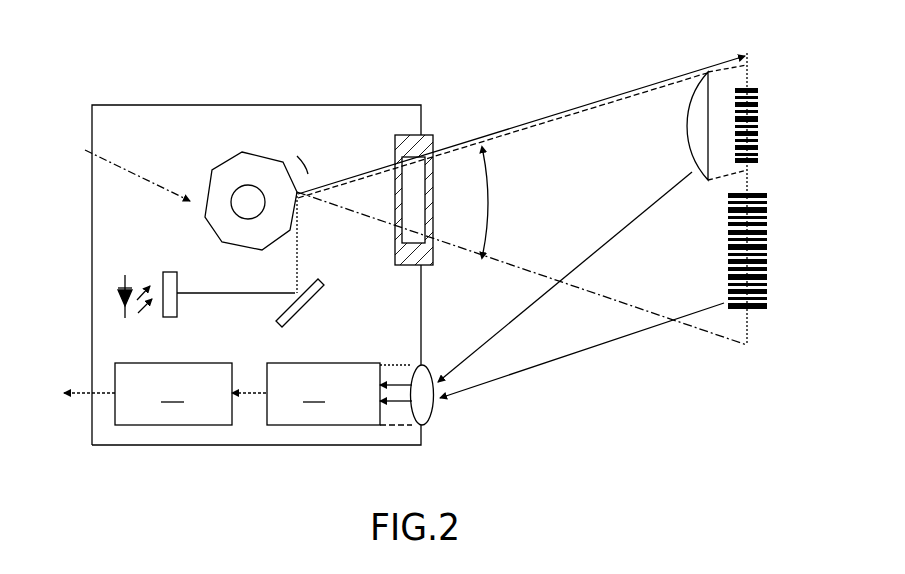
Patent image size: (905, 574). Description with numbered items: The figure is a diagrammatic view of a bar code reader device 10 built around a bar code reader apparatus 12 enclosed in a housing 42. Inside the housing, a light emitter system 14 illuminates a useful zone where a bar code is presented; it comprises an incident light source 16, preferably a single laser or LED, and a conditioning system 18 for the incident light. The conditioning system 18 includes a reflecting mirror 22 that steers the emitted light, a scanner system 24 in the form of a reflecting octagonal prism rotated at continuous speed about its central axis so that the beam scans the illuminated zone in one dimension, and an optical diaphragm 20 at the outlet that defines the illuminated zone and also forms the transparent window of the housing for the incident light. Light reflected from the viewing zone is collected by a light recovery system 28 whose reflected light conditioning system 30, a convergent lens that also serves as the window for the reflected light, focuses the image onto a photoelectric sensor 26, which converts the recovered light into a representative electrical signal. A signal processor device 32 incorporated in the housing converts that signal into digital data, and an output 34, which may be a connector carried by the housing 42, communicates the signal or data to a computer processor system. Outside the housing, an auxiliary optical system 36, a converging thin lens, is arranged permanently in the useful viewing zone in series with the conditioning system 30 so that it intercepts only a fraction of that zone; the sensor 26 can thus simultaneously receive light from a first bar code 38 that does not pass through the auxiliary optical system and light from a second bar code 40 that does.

The bar code reader device 10 is at (143, 70).
The bar code reader apparatus 12 is at (318, 462).
The light emitter system 14 is at (148, 227).
The incident light source 16 is at (118, 297).
The conditioning system 18 is at (127, 169).
The optical diaphragm 20 is at (425, 136).
The reflecting mirror 22 is at (320, 285).
The scanner system 24 is at (283, 162).
The photoelectric sensor 26 is at (306, 394).
The light recovery system 28 is at (415, 430).
The reflected light conditioning system 30 is at (430, 408).
The signal processor device 32 is at (173, 394).
The output 34 is at (94, 397).
The auxiliary optical system 36 is at (690, 125).
The first bar code 38 is at (767, 262).
The second bar code 40 is at (758, 126).
The housing 42 is at (425, 305).